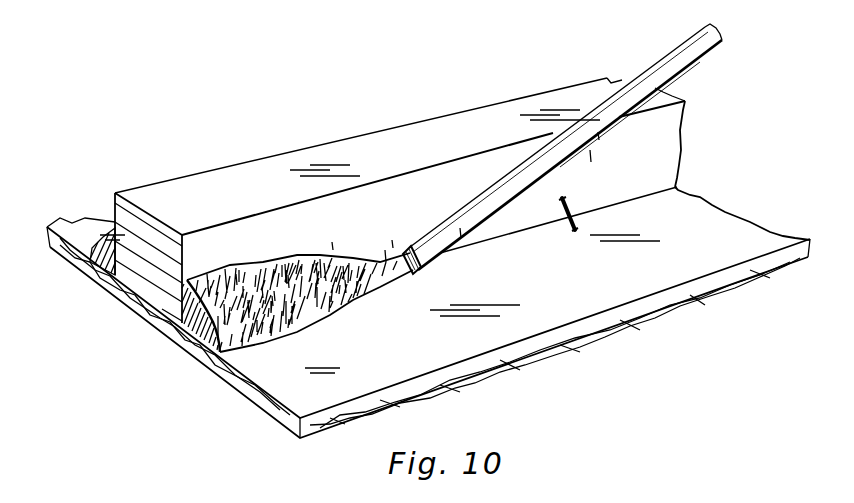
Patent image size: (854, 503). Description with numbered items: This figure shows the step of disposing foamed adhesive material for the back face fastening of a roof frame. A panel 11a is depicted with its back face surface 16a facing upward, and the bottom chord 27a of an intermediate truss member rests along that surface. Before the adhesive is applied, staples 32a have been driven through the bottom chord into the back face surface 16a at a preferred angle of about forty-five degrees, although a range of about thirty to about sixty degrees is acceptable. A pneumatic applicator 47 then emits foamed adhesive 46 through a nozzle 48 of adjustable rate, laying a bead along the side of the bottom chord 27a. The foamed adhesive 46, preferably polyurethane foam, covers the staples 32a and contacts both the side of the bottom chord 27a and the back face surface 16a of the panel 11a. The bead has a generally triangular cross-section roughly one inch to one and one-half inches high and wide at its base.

The panel 11a is at (599, 276).
The back face surface 16a is at (279, 381).
The bottom chord 27a is at (208, 192).
The staples 32a is at (583, 204).
The foamed adhesive 46 is at (103, 237).
The pneumatic applicator 47 is at (645, 68).
The nozzle 48 is at (415, 252).